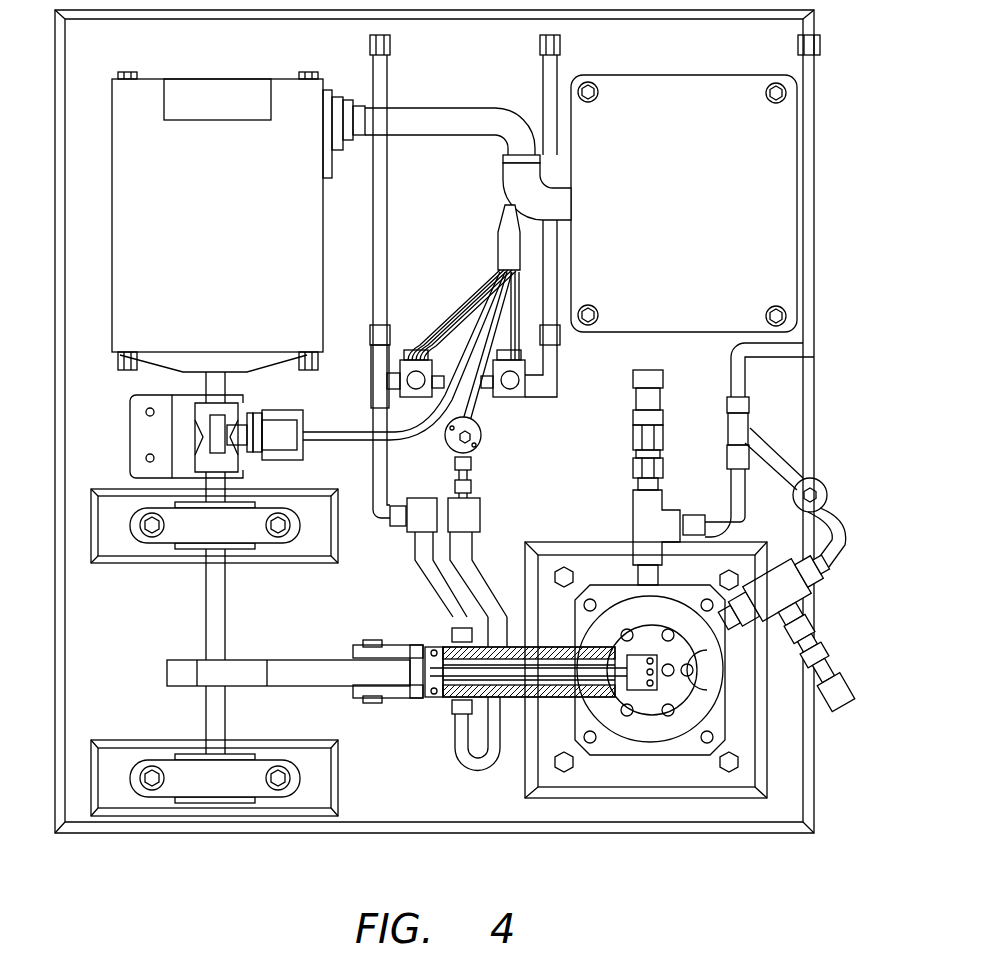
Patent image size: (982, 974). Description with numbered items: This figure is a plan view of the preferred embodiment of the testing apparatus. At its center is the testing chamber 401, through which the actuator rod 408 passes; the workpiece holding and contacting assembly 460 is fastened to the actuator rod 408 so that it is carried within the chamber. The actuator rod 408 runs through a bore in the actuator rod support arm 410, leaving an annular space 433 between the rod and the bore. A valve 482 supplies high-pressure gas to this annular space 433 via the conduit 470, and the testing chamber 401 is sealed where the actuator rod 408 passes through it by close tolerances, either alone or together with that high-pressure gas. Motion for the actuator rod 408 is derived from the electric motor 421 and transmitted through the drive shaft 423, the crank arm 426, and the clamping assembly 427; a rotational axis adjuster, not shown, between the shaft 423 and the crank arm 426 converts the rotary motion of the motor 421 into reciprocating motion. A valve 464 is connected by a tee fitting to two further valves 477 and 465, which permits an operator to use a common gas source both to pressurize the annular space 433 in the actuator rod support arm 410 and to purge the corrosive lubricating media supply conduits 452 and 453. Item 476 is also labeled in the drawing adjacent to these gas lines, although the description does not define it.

The testing chamber 401 is at (625, 705).
The actuator rod 408 is at (443, 698).
The actuator rod support arm 410 is at (516, 690).
The electric motor 421 is at (238, 229).
The drive shaft 423 is at (204, 726).
The crank arm 426 is at (307, 660).
The clamping assembly 427 is at (400, 697).
The annular space 433 is at (445, 655).
The corrosive lubricating media supply conduit 452 is at (440, 648).
The corrosive lubricating media supply conduit 453 is at (382, 495).
The workpiece holding and contacting assembly 460 is at (645, 705).
The valve 464 is at (520, 398).
The valve 465 is at (480, 440).
The conduit 470 is at (452, 700).
The hydraulic hose 476 is at (398, 357).
The valve 477 is at (435, 360).
The valve 482 is at (482, 518).